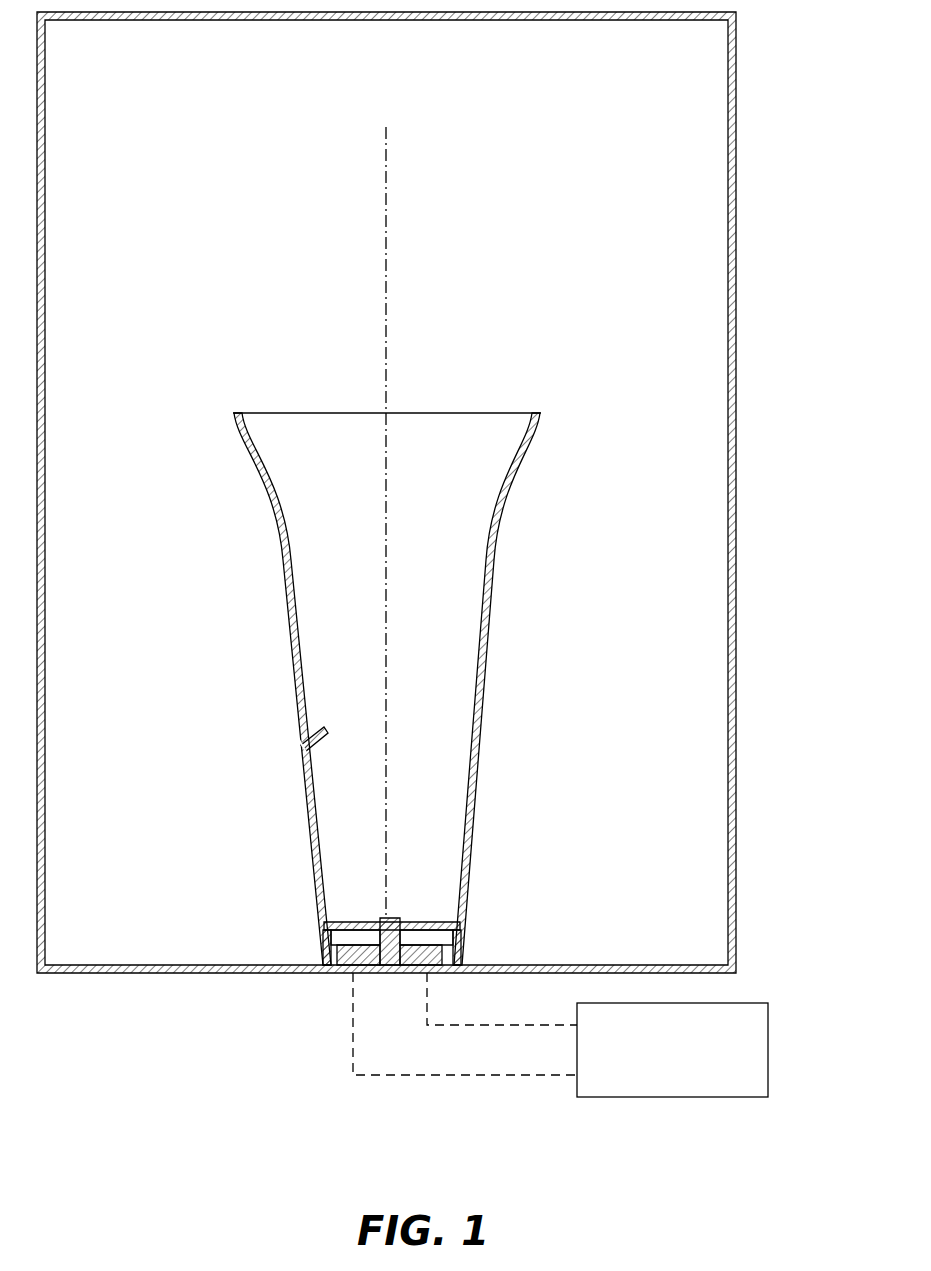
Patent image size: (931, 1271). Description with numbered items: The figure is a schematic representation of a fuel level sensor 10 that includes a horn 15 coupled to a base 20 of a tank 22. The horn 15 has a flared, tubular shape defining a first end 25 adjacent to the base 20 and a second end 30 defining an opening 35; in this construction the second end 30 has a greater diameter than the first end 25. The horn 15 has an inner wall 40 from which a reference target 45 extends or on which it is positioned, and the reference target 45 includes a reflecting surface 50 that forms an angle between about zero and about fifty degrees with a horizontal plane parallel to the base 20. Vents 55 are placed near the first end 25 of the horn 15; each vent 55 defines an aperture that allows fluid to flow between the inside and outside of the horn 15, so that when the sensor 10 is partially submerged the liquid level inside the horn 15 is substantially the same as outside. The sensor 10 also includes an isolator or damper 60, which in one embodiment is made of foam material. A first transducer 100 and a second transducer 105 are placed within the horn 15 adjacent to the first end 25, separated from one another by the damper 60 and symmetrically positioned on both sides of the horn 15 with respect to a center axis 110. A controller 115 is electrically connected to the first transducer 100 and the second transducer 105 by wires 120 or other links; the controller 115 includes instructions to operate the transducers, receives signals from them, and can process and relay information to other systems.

The fuel level sensor 10 is at (196, 259).
The horn 15 is at (426, 664).
The base 20 is at (343, 973).
The tank 22 is at (735, 518).
The first end 25 is at (460, 937).
The second end 30 is at (525, 430).
The opening 35 is at (487, 413).
The inner wall 40 is at (292, 578).
The reference target 45 is at (324, 727).
The reflecting surface 50 is at (325, 748).
The vents 55 is at (318, 950).
The damper 60 is at (460, 957).
The first transducer 100 is at (424, 930).
The second transducer 105 is at (357, 922).
The center axis 110 is at (387, 214).
The controller 115 is at (622, 1097).
The wires 120 is at (520, 1025).